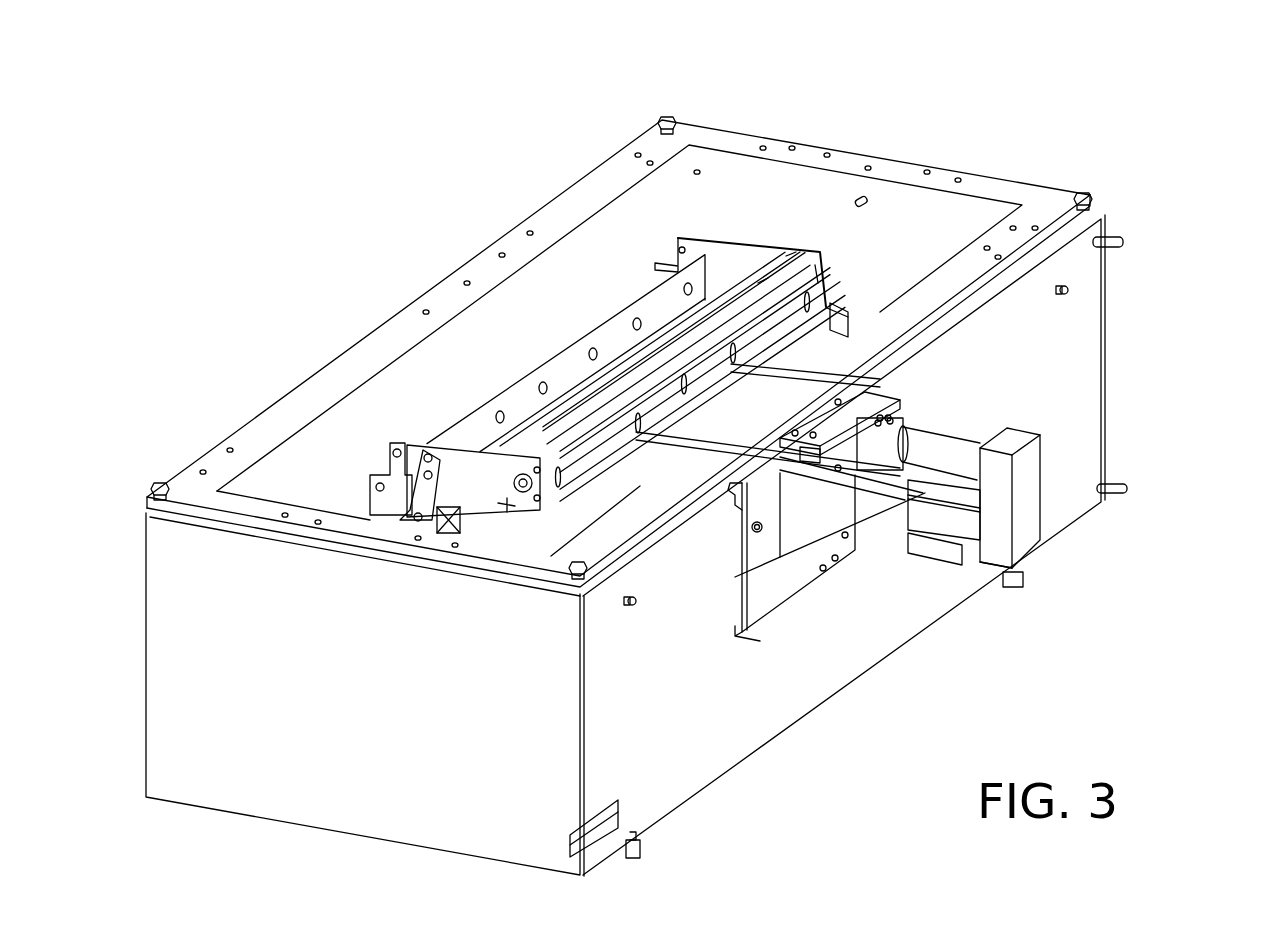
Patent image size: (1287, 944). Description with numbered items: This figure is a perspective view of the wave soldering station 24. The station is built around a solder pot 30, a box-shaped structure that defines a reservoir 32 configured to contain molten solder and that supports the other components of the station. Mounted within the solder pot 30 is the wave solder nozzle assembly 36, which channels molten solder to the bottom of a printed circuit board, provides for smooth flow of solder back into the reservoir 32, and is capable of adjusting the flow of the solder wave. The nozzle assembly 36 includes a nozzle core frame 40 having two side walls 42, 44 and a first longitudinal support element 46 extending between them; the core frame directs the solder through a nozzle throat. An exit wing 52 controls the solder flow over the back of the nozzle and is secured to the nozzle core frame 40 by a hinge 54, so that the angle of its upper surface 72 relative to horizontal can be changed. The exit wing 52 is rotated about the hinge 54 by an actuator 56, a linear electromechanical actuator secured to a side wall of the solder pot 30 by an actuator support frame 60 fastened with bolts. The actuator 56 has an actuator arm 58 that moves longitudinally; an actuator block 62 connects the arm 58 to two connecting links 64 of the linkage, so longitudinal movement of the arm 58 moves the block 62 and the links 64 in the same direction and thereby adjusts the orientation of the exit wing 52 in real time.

The wave soldering station 24 is at (1167, 138).
The solder pot 30 is at (1083, 297).
The reservoir 32 is at (970, 227).
The wave solder nozzle assembly 36 is at (749, 213).
The nozzle core frame 40 is at (735, 255).
The side wall 42 is at (760, 283).
The side wall 44 is at (467, 480).
The first longitudinal support element 46 is at (578, 377).
The exit wing 52 is at (778, 275).
The hinge 54 is at (680, 234).
The actuator 56 is at (940, 447).
The actuator arm 58 is at (860, 455).
The actuator support frame 60 is at (808, 518).
The actuator block 62 is at (865, 396).
The connecting links 64 is at (875, 370).
The upper surface 72 is at (797, 255).